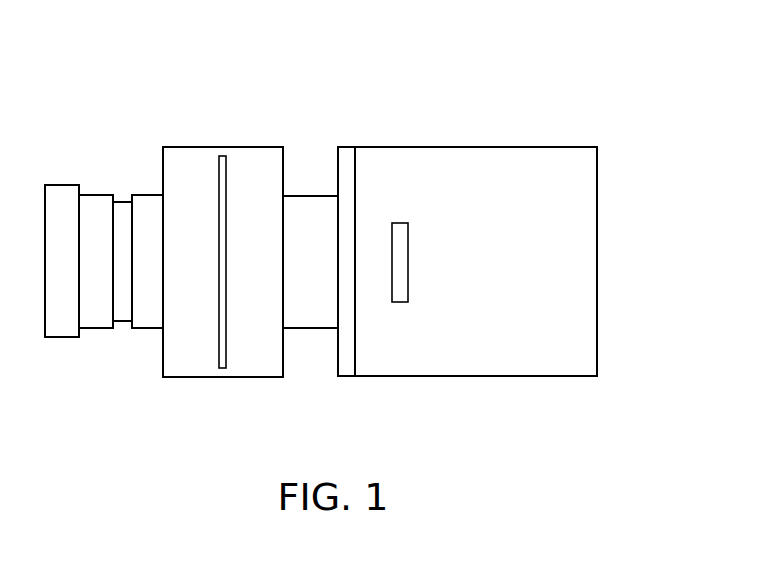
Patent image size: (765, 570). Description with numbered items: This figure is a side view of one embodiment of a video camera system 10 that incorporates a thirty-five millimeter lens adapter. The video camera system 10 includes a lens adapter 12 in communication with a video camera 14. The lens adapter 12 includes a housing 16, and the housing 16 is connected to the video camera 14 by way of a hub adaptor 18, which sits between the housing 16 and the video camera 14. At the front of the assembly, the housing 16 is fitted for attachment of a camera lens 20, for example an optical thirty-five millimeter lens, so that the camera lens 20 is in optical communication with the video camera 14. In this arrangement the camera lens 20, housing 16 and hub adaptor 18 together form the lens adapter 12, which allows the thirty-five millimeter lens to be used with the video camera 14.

The video camera system 10 is at (528, 60).
The lens adapter 12 is at (338, 405).
The video camera 14 is at (417, 146).
The housing 16 is at (202, 146).
The hub adaptor 18 is at (312, 195).
The camera lens 20 is at (62, 183).